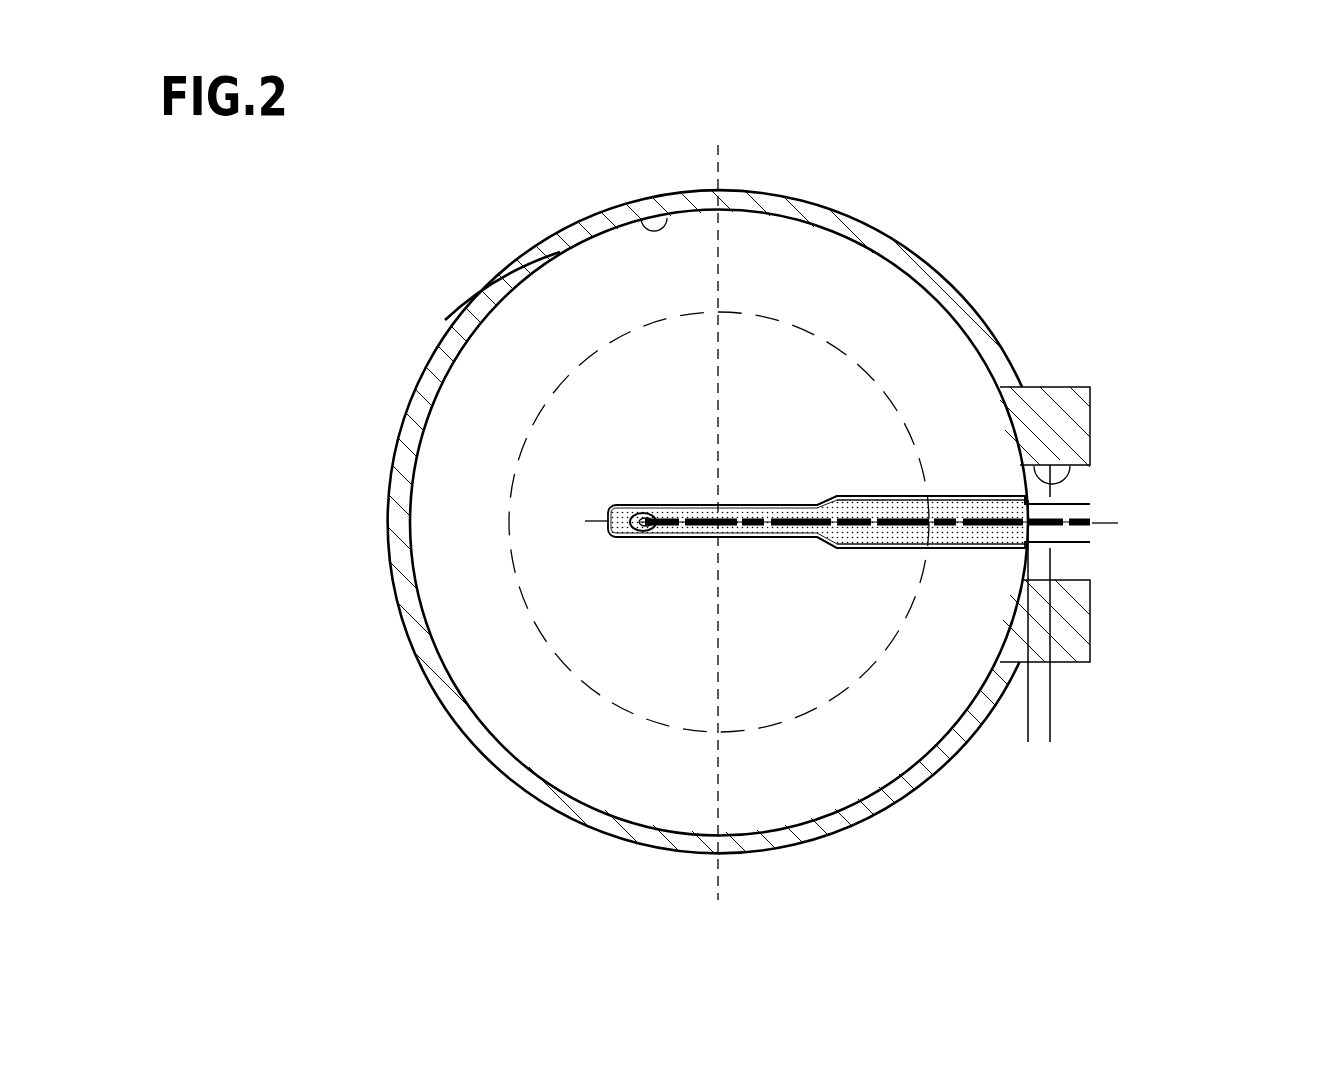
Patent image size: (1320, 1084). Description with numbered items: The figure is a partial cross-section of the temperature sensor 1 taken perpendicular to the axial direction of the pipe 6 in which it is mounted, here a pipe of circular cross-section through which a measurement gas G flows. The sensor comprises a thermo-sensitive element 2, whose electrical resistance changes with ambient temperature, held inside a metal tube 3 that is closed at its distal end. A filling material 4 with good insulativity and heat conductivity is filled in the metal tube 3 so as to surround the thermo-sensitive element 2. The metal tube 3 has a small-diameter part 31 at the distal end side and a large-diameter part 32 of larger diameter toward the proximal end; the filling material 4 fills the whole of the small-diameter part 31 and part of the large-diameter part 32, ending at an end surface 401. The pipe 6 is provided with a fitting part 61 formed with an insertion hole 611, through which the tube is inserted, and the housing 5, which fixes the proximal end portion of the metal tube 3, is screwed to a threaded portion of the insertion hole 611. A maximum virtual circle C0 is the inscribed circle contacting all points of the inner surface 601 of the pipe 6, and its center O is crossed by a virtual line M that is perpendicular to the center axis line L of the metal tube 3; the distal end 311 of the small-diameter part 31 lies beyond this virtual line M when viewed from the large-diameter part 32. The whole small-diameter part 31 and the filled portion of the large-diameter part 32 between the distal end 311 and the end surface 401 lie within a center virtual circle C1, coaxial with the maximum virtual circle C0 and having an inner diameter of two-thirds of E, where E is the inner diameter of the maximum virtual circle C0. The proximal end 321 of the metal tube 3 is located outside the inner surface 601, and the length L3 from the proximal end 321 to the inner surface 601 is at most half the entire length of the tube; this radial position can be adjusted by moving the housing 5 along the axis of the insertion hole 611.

The temperature sensor 1 is at (942, 473).
The thermo-sensitive element 2 is at (642, 540).
The metal tube 3 is at (937, 553).
The small-diameter part 31 is at (760, 540).
The distal end 311 is at (607, 520).
The large-diameter part 32 is at (890, 547).
The proximal end 321 is at (1052, 680).
The filling material 4 is at (767, 503).
The end surface 401 is at (863, 552).
The housing 5 is at (1087, 558).
The pipe 6 is at (517, 773).
The inner surface 601 is at (641, 218).
The fitting part 61 is at (1048, 400).
The insertion hole 611 is at (1093, 467).
The measurement gas G is at (487, 673).
The center O is at (717, 527).
The virtual line M is at (720, 270).
The maximum virtual circle C0 is at (813, 223).
The center virtual circle C1 is at (786, 720).
The inner diameter E is at (228, 207).
The center axis line L is at (1105, 523).
The length L3 is at (995, 732).